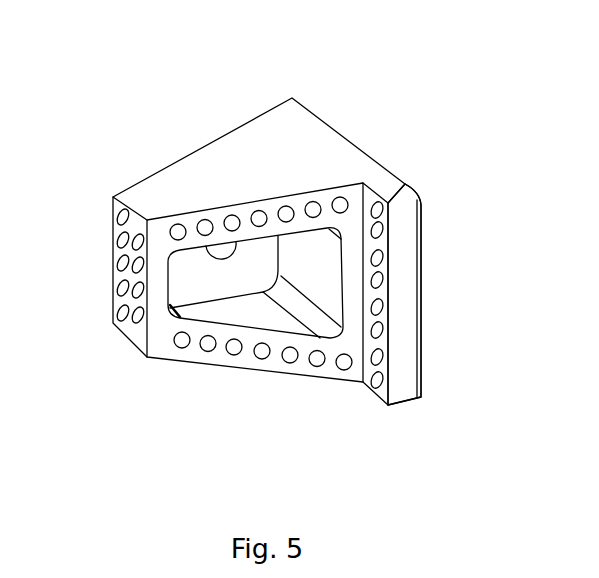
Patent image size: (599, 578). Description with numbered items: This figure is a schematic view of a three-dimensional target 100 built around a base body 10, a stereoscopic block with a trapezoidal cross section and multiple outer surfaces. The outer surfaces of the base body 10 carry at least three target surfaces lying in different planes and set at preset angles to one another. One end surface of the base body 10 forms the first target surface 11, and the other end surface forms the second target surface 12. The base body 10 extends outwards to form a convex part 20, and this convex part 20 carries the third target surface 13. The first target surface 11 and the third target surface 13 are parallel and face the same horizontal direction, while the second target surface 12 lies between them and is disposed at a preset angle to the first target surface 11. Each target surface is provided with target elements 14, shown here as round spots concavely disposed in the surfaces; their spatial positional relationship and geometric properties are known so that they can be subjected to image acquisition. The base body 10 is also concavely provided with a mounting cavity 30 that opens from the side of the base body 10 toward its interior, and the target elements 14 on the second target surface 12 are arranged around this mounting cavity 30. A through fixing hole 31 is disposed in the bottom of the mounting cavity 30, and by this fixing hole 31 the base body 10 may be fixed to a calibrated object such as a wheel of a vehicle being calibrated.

The three-dimensional target 100 is at (192, 58).
The base body 10 is at (304, 120).
The first target surface 11 is at (132, 230).
The second target surface 12 is at (330, 373).
The third target surface 13 is at (385, 300).
The target elements 14 is at (178, 233).
The convex part 20 is at (398, 242).
The mounting cavity 30 is at (253, 308).
The fixing hole 31 is at (218, 253).